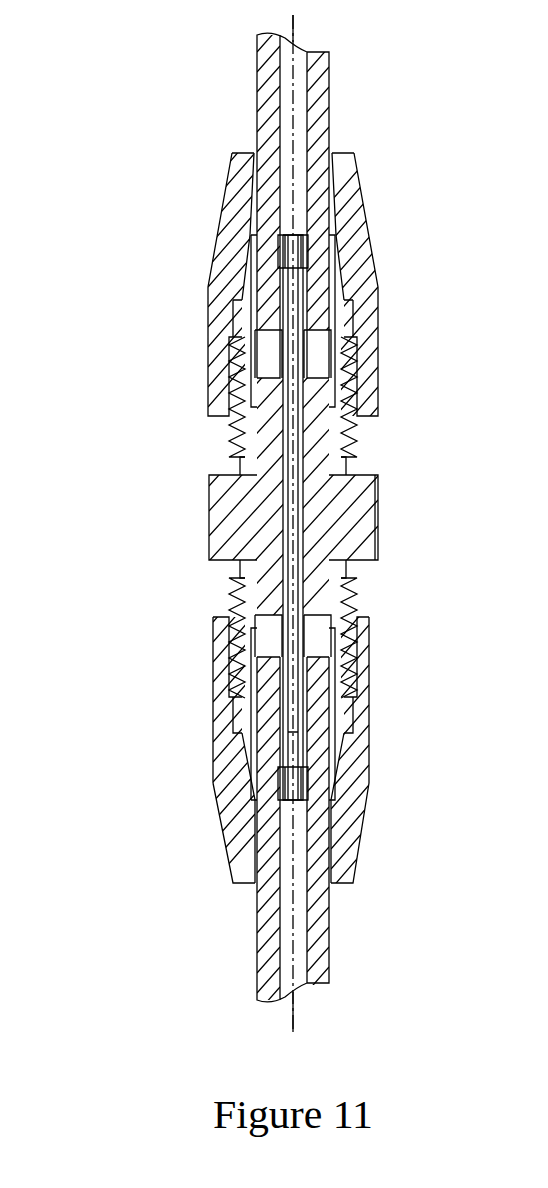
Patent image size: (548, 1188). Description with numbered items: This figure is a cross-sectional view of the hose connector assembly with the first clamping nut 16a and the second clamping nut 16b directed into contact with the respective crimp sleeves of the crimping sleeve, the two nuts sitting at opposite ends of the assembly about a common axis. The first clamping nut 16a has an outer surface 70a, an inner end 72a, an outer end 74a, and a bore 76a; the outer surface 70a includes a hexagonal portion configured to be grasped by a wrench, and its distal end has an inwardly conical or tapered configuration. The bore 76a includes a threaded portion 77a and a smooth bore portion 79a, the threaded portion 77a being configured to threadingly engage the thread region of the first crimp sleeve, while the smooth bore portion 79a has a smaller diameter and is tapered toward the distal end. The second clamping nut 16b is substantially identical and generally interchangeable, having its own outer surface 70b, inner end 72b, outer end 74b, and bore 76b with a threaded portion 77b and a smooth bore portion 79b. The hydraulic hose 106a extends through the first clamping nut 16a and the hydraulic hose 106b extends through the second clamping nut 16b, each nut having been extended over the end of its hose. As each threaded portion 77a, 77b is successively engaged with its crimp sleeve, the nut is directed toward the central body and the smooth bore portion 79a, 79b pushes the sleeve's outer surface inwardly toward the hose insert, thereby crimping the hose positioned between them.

The first clamping nut 16a is at (108, 309).
The second clamping nut 16b is at (393, 780).
The outer surface 70a is at (376, 308).
The outer surface 70b is at (362, 718).
The inner end 72a is at (376, 413).
The inner end 72b is at (360, 617).
The outer end 74a is at (349, 153).
The outer end 74b is at (350, 880).
The bore 76a is at (332, 247).
The bore 76b is at (360, 810).
The threaded portion 77a is at (355, 383).
The threaded portion 77b is at (373, 662).
The smooth bore portion 79a is at (332, 197).
The smooth bore portion 79b is at (350, 860).
The hydraulic hose 106a is at (330, 75).
The hydraulic hose 106b is at (330, 978).